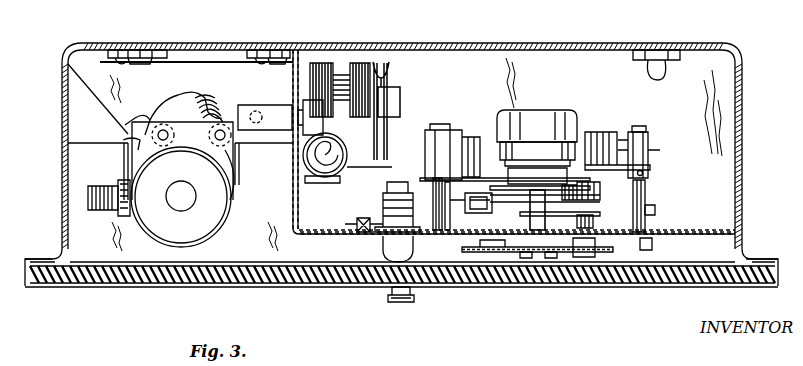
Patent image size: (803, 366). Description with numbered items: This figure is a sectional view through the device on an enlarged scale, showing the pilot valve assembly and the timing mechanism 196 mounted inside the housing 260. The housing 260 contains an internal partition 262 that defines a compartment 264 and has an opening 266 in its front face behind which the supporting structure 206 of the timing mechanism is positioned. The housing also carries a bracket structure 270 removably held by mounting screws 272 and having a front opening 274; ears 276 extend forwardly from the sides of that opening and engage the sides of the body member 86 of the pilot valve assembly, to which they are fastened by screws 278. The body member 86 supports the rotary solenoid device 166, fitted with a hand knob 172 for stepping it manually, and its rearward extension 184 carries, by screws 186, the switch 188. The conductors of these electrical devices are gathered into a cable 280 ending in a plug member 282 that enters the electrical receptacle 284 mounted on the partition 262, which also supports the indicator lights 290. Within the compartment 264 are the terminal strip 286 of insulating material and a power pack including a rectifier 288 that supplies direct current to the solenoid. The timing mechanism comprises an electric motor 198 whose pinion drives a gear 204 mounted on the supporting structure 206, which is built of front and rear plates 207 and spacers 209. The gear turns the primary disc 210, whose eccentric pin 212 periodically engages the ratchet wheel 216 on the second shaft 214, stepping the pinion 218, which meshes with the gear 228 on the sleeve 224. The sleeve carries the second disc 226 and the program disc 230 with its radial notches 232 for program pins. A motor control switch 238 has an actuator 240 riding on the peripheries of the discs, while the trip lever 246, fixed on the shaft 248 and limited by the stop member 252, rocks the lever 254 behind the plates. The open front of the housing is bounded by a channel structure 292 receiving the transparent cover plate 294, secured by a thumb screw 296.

The body member 86 is at (232, 185).
The rotary solenoid device 166 is at (213, 207).
The hand knob 172 is at (181, 183).
The rearward extension of transverse member 184 is at (130, 120).
The screws 186 is at (163, 130).
The switch 188 is at (172, 112).
The timing mechanism 196 is at (549, 100).
The electric motor 198 is at (516, 110).
The gear 204 is at (536, 184).
The supporting structure 206 is at (645, 190).
The front and rear plates 207 is at (642, 163).
The spacers 209 is at (386, 200).
The primary disc 210 is at (512, 160).
The eccentric pin 212 is at (578, 186).
The second shaft 214 is at (586, 140).
The ratchet wheel 216 is at (645, 172).
The pinion 218 is at (650, 212).
The sleeve 224 is at (526, 216).
The second disc 226 is at (578, 210).
The gear 228 is at (450, 236).
The program disc 230 is at (530, 260).
The radial notches 232 is at (608, 252).
The motor control switch 238 is at (436, 196).
The actuator 240 is at (466, 196).
The trip lever 246 is at (652, 245).
The shaft 248 is at (636, 127).
The stop member 252 is at (586, 258).
The lever 254 is at (636, 160).
The housing 260 is at (370, 43).
The internal partition 262 is at (318, 236).
The compartment 264 is at (713, 50).
The opening 266 is at (423, 280).
The bracket structure 270 is at (78, 135).
The mounting screws 272 is at (120, 43).
The opening 274 is at (125, 136).
The ears 276 is at (120, 172).
The screws 278 is at (123, 155).
The cable 280 is at (208, 96).
The plug member 282 is at (266, 105).
The electrical receptacle 284 is at (326, 136).
The terminal strip 286 is at (460, 131).
The rectifier 288 is at (386, 76).
The indicator lights 290 is at (386, 252).
The channel structure 292 is at (36, 258).
The transparent cover plate 294 is at (83, 283).
The thumb screw 296 is at (403, 302).